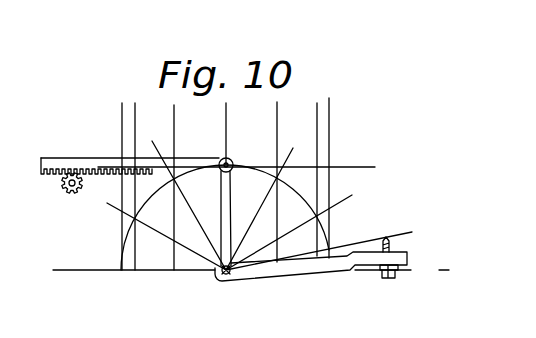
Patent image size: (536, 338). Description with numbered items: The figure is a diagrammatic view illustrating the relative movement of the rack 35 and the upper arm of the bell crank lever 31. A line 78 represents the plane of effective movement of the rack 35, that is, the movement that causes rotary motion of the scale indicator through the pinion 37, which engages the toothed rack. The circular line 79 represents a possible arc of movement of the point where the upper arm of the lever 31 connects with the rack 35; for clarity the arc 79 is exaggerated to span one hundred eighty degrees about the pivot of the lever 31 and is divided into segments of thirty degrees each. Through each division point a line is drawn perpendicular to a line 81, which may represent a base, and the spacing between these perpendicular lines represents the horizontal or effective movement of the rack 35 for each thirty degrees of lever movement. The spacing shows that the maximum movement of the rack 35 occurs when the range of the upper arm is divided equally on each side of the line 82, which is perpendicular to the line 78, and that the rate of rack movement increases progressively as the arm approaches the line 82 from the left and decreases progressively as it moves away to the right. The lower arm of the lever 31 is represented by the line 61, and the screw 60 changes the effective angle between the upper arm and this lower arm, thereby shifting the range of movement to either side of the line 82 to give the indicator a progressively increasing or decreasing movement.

The rack 35 is at (87, 164).
The pinion 37 is at (66, 190).
The line representing the plane of effective movement of the rack 78 is at (337, 164).
The line perpendicular to line 78 82 is at (227, 135).
The circular line 79 is at (120, 251).
The line representing the lower arm of the lever 61 is at (322, 250).
The bell crank lever 31 is at (230, 210).
The screw 60 is at (332, 259).
The line representing a base 81 is at (73, 272).